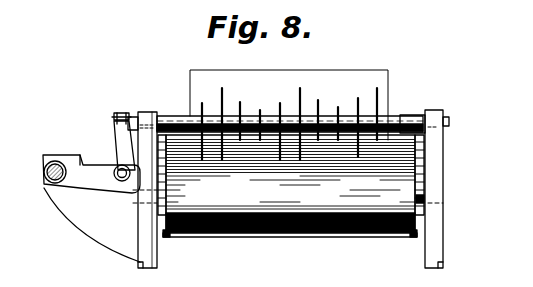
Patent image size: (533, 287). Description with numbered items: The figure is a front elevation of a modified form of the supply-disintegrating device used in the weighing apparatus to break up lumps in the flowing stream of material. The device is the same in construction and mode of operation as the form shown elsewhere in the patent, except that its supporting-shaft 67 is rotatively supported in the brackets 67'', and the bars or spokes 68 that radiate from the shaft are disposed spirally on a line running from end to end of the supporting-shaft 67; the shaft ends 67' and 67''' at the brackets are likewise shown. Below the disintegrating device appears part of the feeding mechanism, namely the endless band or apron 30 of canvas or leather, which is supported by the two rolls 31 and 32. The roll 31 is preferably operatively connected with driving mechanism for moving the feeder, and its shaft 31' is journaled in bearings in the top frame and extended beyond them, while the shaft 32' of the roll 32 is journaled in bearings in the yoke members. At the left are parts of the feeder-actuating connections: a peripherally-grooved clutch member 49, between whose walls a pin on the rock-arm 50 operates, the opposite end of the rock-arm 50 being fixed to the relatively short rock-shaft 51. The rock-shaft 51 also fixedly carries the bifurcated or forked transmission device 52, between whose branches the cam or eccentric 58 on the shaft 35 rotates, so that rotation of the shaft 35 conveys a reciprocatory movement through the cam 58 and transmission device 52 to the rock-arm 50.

The endless band or apron 30 is at (278, 178).
The roll 31 is at (173, 152).
The shaft of the roll 31' is at (447, 175).
The roll 32 is at (290, 248).
The shaft 32' is at (447, 192).
The shaft 35 is at (56, 181).
The peripherally-grooved clutch member 49 is at (118, 113).
The rock-arm 50 is at (118, 141).
The rock-shaft 51 is at (123, 182).
The bifurcated or forked transmission device 52 is at (98, 177).
The cam or eccentric 58 is at (44, 168).
The supporting-shaft 67 is at (290, 103).
The shaft end 67' is at (418, 108).
The brackets 67'' is at (151, 169).
The right post 67''' is at (459, 174).
The bars or spokes 68 is at (377, 89).